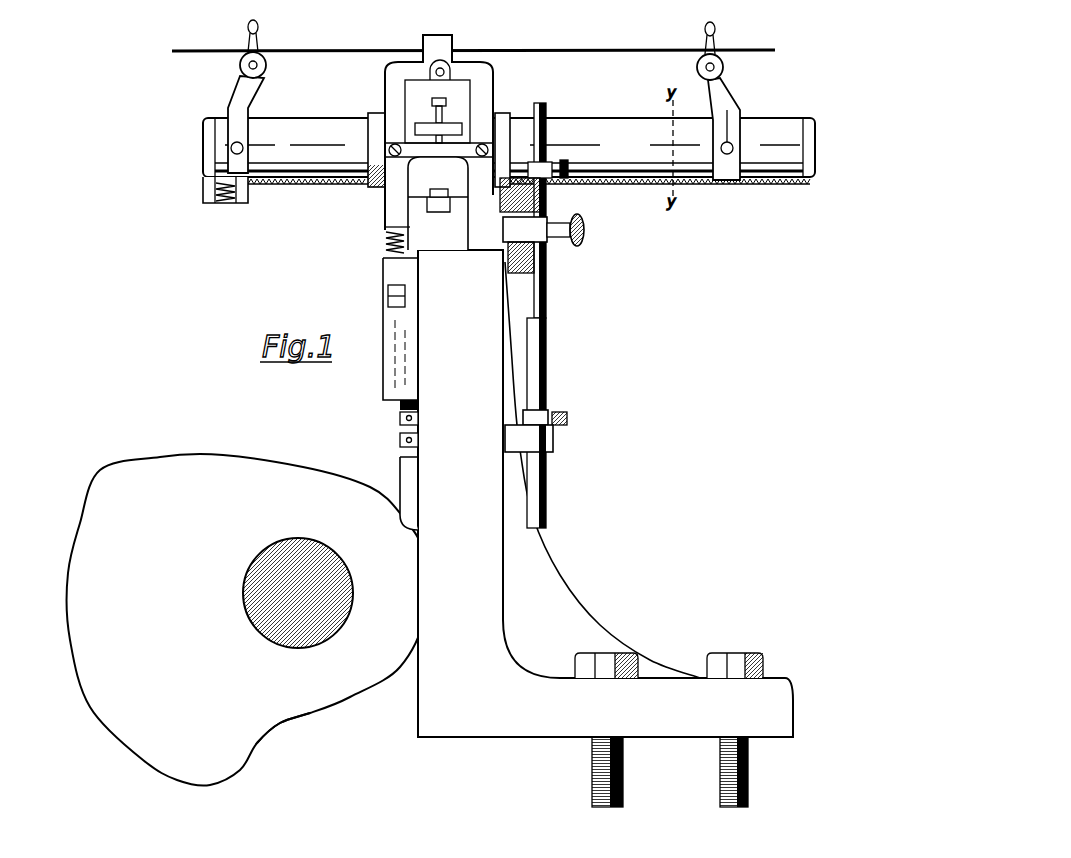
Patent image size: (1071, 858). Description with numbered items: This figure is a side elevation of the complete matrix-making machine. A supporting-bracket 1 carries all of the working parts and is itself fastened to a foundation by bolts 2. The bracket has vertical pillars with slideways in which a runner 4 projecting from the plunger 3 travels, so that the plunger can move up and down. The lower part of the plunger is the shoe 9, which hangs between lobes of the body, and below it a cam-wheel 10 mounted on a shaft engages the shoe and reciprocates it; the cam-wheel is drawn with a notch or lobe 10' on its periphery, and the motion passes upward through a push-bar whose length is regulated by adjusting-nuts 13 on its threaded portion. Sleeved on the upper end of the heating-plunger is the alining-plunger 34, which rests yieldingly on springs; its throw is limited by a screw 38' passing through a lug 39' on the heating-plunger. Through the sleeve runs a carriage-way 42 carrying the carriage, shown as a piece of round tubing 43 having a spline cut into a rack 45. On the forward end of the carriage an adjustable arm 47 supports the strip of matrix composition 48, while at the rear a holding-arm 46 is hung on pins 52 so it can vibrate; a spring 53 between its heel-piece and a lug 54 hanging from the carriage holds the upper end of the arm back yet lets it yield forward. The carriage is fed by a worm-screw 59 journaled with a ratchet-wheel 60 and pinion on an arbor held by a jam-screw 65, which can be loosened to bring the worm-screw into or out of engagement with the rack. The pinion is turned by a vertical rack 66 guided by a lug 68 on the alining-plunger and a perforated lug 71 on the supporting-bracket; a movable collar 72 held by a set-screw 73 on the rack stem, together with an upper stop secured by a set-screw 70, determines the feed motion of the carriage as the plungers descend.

The supporting-bracket 1 is at (478, 378).
The bolts 2 is at (623, 770).
The plunger 3 is at (440, 218).
The runner 4 is at (440, 233).
The shoe 9 is at (408, 477).
The cam-wheel 10 is at (247, 620).
The notch of work plate 10' is at (281, 737).
The adjusting-nuts 13 is at (400, 442).
The alining-plunger 34 is at (393, 82).
The screw 38' is at (390, 116).
The lug 39' is at (476, 105).
The carriage-way 42 is at (375, 138).
The round tubing 43 is at (603, 128).
The rack 45 is at (527, 197).
The holding-arm 46 is at (240, 86).
The arm 47 is at (730, 104).
The strip of matrix composition 48 is at (562, 48).
The pins 52 is at (231, 150).
The spring 53 is at (228, 204).
The lug 54 is at (208, 195).
The worm-screw 59 is at (535, 262).
The ratchet-wheel 60 is at (530, 218).
The jam-screw 65 is at (584, 232).
The rack 66 is at (548, 112).
The guide 68 is at (532, 230).
The set-screw 70 is at (582, 185).
The lug 71 is at (560, 440).
The movable collar 72 is at (555, 405).
The set-screw 73 is at (573, 416).